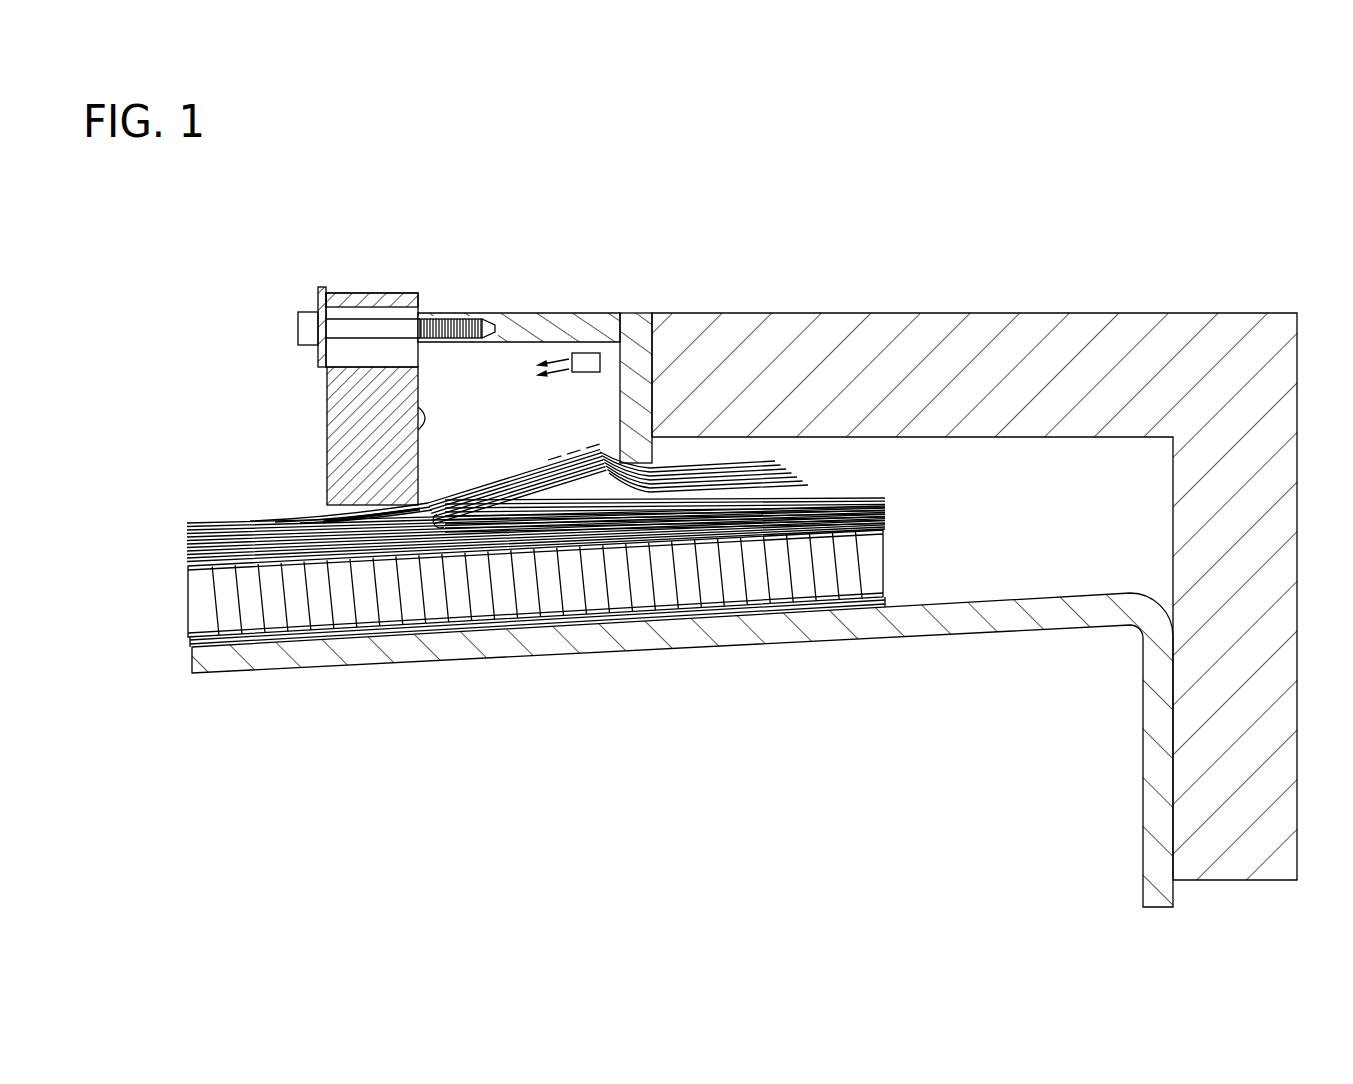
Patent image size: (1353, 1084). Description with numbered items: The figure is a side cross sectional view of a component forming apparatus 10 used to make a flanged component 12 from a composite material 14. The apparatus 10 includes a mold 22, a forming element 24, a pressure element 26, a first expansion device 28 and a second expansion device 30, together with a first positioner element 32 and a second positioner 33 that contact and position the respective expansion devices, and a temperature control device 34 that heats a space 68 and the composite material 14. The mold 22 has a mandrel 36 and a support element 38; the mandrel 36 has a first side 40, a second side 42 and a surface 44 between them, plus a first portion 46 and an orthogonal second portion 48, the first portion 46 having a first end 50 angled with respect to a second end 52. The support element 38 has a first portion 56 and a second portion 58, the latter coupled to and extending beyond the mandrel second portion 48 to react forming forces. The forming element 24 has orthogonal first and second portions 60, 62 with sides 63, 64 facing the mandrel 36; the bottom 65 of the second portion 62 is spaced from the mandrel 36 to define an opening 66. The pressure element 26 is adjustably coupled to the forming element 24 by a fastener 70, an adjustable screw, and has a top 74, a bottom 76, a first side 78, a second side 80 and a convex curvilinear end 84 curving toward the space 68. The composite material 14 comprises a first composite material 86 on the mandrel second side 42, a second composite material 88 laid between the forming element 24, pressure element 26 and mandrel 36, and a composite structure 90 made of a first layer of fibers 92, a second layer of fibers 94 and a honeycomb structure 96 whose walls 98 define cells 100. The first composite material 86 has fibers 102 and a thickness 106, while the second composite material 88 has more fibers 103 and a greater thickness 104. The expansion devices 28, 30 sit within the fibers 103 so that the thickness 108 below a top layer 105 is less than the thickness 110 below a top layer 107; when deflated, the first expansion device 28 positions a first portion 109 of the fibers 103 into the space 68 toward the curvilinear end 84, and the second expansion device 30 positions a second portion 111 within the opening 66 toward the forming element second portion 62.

The component forming apparatus 10 is at (1183, 193).
The flanged component 12 is at (186, 525).
The composite material 14 is at (176, 592).
The mold 22 is at (513, 682).
The forming element 24 is at (481, 302).
The pressure element 26 is at (365, 280).
The first expansion device 28 is at (583, 470).
The second expansion device 30 is at (855, 535).
The first positioner element 32 is at (600, 520).
The second positioner 33 is at (845, 520).
The temperature control device 34 is at (592, 352).
The mandrel 36 is at (1070, 615).
The support element 38 is at (826, 300).
The first side 40 is at (380, 672).
The second side 42 is at (1010, 598).
The surface 44 is at (355, 660).
The first portion 46 is at (807, 637).
The second portion 48 is at (1143, 880).
The first end 50 is at (192, 668).
The second end 52 is at (1165, 602).
The first portion 56 is at (1080, 330).
The second portion 58 is at (1268, 698).
The first portion 60 is at (578, 350).
The second portion 62 is at (640, 380).
The side 63 is at (507, 366).
The side 64 is at (627, 460).
The bottom 65 is at (660, 475).
The opening 66 is at (683, 463).
The space 68 is at (496, 366).
The fastener 70 is at (300, 324).
The top 74 is at (400, 293).
The bottom 76 is at (330, 508).
The first side 78 is at (327, 378).
The second side 80 is at (410, 422).
The curvilinear end 84 is at (433, 520).
The first composite material 86 is at (560, 600).
The second composite material 88 is at (905, 490).
The composite structure 90 is at (908, 535).
The first layer of fibers 92 is at (195, 646).
The second layer of fibers 94 is at (190, 566).
The honeycomb structure 96 is at (892, 566).
The walls 98 is at (887, 590).
The cells 100 is at (733, 595).
The fibers 102 is at (472, 628).
The fibers 103 is at (233, 535).
The thickness 104 is at (185, 575).
The top layer 105 is at (462, 487).
The thickness 106 is at (688, 573).
The top layer 107 is at (760, 518).
The thickness 108 is at (607, 462).
The first portion 109 is at (537, 467).
The thickness 110 is at (757, 440).
The second portion 111 is at (615, 470).